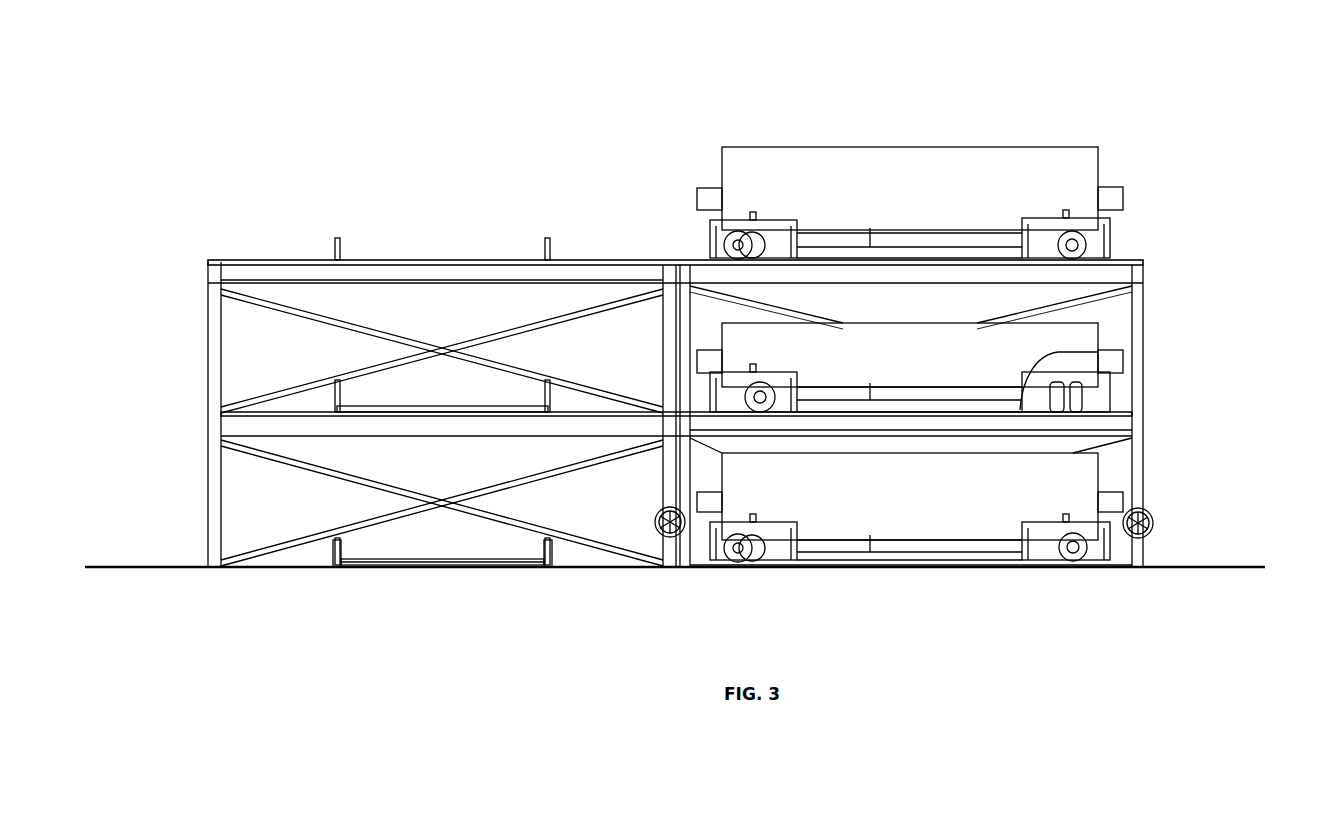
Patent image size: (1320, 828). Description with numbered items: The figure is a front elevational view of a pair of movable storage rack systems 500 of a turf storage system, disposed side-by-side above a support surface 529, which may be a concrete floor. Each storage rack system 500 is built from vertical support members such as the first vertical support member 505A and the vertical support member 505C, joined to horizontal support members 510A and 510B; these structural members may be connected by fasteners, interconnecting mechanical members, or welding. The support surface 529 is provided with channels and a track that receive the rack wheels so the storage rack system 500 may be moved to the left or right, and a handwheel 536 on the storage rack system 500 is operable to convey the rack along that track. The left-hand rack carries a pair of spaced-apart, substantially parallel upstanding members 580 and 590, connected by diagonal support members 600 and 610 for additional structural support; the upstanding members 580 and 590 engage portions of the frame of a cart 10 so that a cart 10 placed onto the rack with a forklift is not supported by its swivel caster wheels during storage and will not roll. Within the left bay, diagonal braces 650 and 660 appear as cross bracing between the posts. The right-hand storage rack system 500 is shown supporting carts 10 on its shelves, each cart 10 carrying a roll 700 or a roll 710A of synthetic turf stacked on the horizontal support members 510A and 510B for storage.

The storage rack system 500 is at (418, 118).
The first vertical support member 505A is at (666, 272).
The vertical support member 505C is at (680, 270).
The horizontal support member 510B is at (718, 272).
The horizontal support member 510A is at (1105, 428).
The roll 700 is at (885, 170).
The container 710A is at (910, 355).
The cart 10 is at (1076, 231).
The handwheel 536 is at (682, 510).
The support surface 529 is at (1037, 568).
The upper cross brace 650 is at (310, 312).
The lower cross brace 660 is at (275, 380).
The upstanding member 590 is at (325, 550).
The upstanding member 580 is at (563, 550).
The diagonal support member 610 is at (405, 570).
The diagonal support member 600 is at (497, 570).